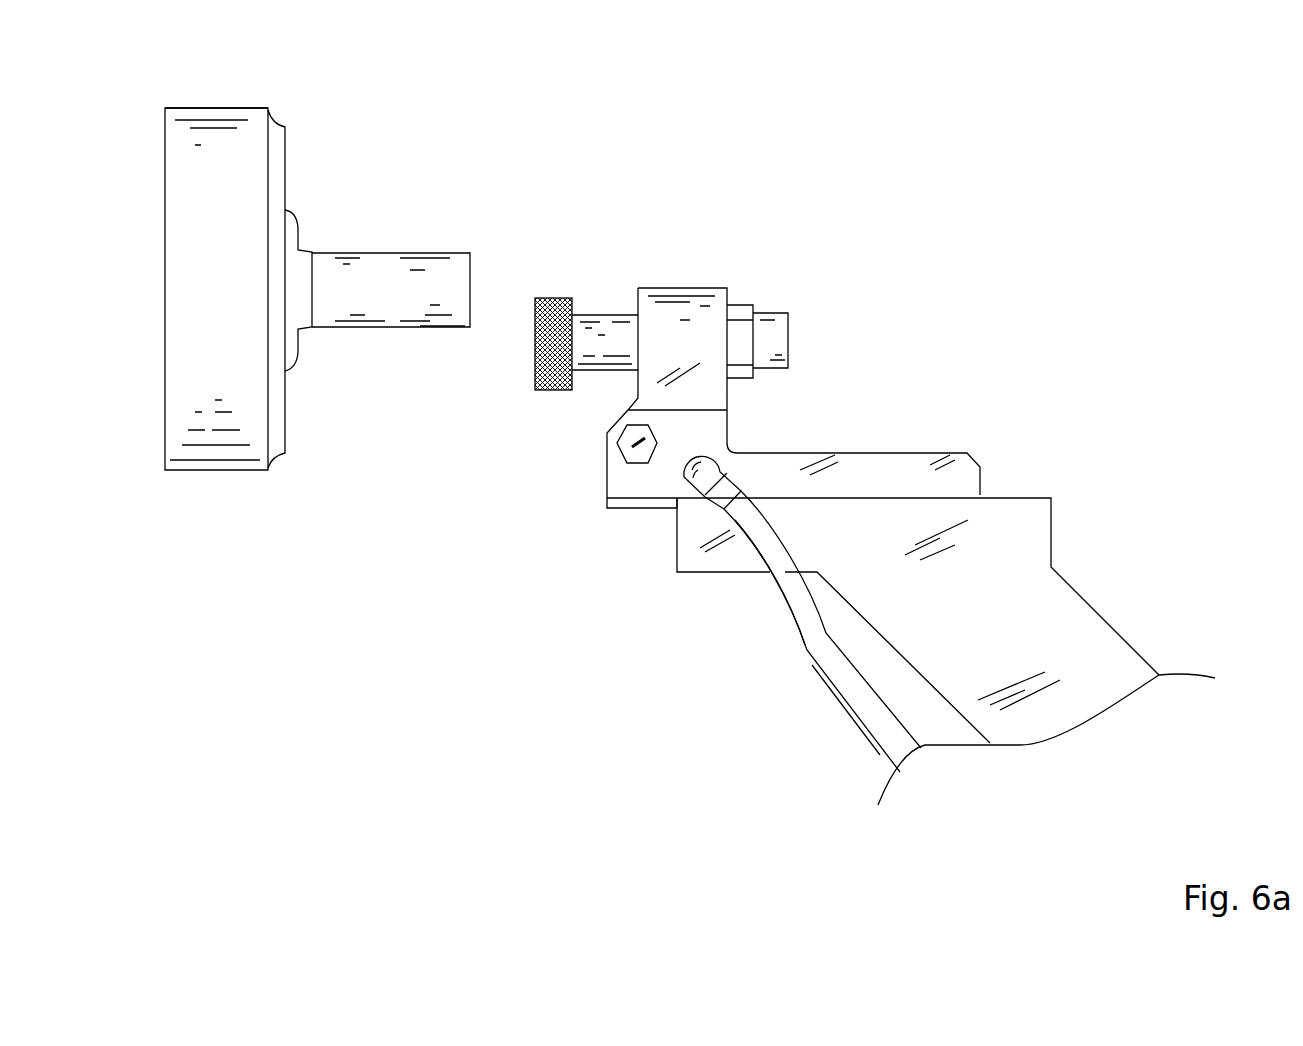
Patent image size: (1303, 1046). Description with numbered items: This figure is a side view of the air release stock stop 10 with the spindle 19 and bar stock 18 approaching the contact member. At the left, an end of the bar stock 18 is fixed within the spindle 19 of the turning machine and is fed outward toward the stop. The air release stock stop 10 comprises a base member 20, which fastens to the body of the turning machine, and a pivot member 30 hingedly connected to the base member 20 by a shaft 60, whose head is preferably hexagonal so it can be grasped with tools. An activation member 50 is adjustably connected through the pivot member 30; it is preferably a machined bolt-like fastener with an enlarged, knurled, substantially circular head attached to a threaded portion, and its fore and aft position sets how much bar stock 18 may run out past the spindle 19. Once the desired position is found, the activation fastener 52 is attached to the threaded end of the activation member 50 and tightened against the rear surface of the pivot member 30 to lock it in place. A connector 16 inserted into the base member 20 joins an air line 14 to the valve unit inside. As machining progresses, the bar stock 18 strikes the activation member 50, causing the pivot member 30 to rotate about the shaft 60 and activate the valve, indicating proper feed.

The air release stock stop 10 is at (693, 163).
The air line 14 is at (823, 658).
The connector 16 is at (698, 483).
The bar stock 18 is at (355, 253).
The spindle 19 is at (248, 158).
The base member 20 is at (907, 450).
The pivot member 30 is at (687, 288).
The activation member 50 is at (553, 297).
The activation fastener 52 is at (747, 304).
The shaft 60 is at (632, 443).